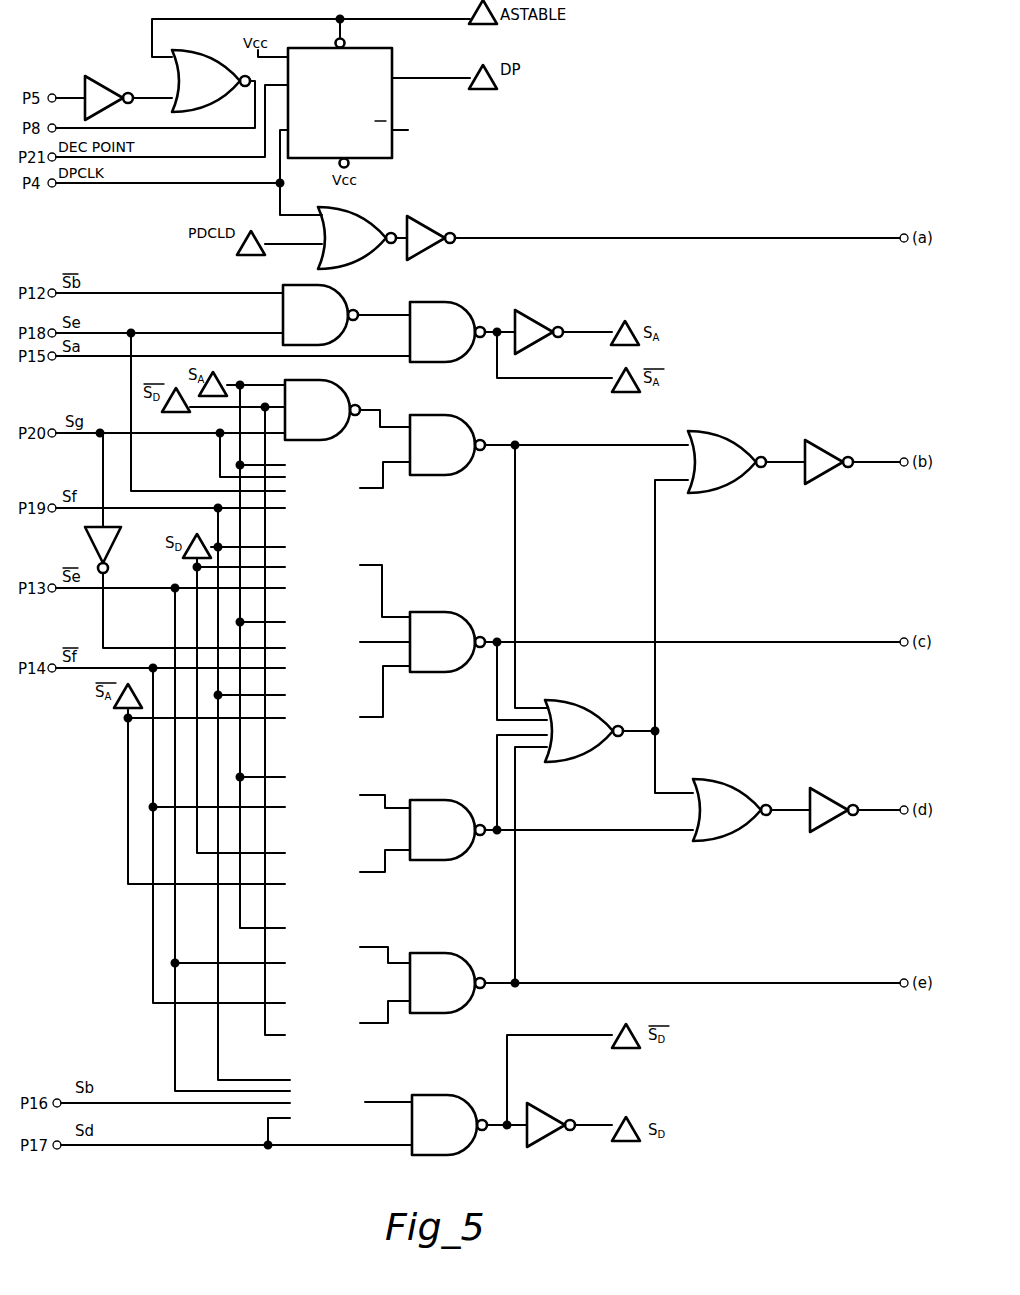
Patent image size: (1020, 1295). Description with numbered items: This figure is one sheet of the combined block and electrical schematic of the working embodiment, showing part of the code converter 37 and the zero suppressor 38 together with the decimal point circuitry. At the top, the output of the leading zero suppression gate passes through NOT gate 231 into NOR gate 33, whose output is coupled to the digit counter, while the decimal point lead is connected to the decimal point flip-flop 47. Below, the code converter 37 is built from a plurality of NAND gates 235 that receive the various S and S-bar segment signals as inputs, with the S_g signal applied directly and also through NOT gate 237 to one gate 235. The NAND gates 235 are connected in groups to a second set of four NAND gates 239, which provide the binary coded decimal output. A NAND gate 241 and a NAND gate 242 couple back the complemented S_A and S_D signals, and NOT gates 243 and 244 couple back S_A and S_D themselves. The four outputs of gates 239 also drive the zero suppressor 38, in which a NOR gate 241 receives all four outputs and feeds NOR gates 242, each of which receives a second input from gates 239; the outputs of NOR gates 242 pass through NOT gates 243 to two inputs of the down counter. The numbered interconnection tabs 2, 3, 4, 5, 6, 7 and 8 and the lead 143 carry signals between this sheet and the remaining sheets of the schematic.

The NOT gate 231 is at (102, 76).
The NOR gate 33 is at (200, 58).
The decimal point flip-flop 47 is at (393, 104).
The NOR gate and inverter 143 is at (388, 268).
The NAND gate 235 is at (290, 285).
The NAND gate 241 is at (433, 362).
The NOT gate 243 is at (528, 311).
The NAND gate 239 is at (470, 477).
The NAND gate 242 is at (752, 420).
The NOT gate 244 is at (532, 1105).
The NOT gate 237 is at (88, 545).
The zero suppressor 38 is at (600, 622).
The code converter 37 is at (103, 755).
The pin connector 2 is at (483, 12).
The pin connector 3 is at (483, 77).
The pin connector 4 is at (251, 243).
The pin connector 5 is at (419, 358).
The pin connector 6 is at (401, 718).
The pin connector 7 is at (411, 837).
The pin connector 8 is at (377, 538).